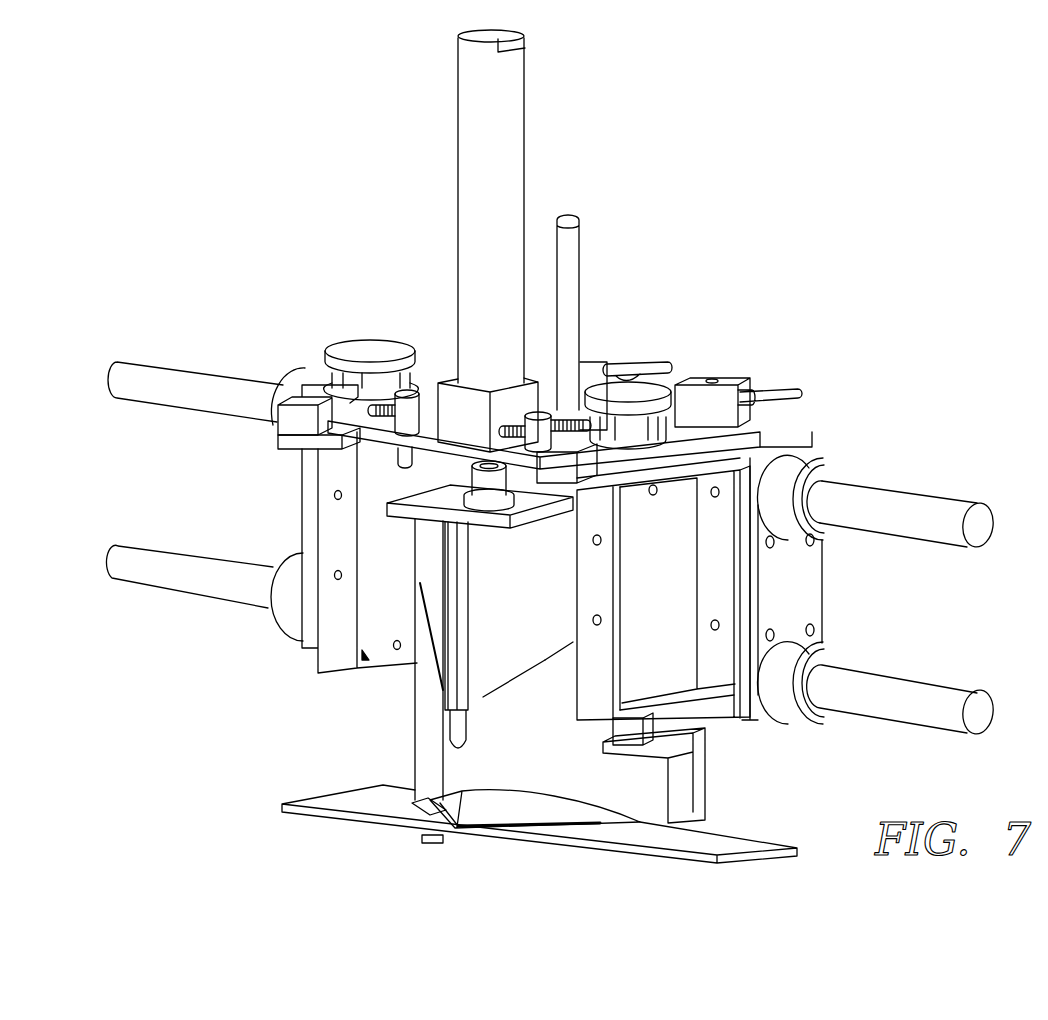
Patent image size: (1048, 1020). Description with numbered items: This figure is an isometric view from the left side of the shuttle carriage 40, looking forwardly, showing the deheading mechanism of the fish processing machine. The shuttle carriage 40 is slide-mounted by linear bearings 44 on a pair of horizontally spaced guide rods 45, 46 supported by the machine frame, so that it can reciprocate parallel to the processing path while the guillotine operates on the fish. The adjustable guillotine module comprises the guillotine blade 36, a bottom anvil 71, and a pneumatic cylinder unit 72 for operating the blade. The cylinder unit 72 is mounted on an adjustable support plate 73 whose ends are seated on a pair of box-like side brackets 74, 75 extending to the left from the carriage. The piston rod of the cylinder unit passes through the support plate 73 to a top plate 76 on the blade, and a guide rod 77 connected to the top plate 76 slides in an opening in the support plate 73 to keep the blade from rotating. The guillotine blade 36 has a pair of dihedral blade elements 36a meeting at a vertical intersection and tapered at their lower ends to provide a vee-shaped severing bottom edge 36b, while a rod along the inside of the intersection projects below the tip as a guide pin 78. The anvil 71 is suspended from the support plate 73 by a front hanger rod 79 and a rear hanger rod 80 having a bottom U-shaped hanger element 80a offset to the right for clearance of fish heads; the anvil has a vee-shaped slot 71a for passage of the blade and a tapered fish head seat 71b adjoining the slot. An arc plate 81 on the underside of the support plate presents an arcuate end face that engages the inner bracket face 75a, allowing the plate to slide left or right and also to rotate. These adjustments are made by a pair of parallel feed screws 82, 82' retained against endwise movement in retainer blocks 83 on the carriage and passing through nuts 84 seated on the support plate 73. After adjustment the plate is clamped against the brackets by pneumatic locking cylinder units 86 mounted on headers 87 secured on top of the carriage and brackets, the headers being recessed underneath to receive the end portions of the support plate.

The pneumatic cylinder unit 72 is at (465, 208).
The guide rod 77 is at (572, 342).
The adjustable support plate 73 is at (425, 443).
The nuts 84 is at (530, 414).
The pneumatic locking cylinder units 86 is at (377, 324).
The headers 87 is at (290, 415).
The inner bracket face 75a is at (325, 446).
The arc plate 81 is at (362, 448).
The guide rod 45 is at (213, 378).
The guide rod 46 is at (168, 560).
The side bracket 75 is at (340, 658).
The guillotine blade 36 is at (433, 566).
The front hanger rod 79 is at (420, 739).
The guide pin 78 is at (468, 742).
The top plate 76 is at (517, 522).
The side bracket 74 is at (590, 698).
The dihedral blade elements 36a is at (480, 677).
The severing bottom edge 36b is at (528, 672).
The rear hanger rod 80 is at (620, 728).
The U-shaped hanger element 80a is at (700, 782).
The anvil 71 is at (332, 797).
The vee-shaped slot 71a is at (427, 815).
The tapered fish head seat 71b is at (545, 793).
The linear bearings 44 is at (830, 473).
The shuttle carriage 40 is at (833, 591).
The feed screw 82 is at (770, 385).
The feed screw 82' is at (637, 362).
The retainer block 83 is at (723, 383).